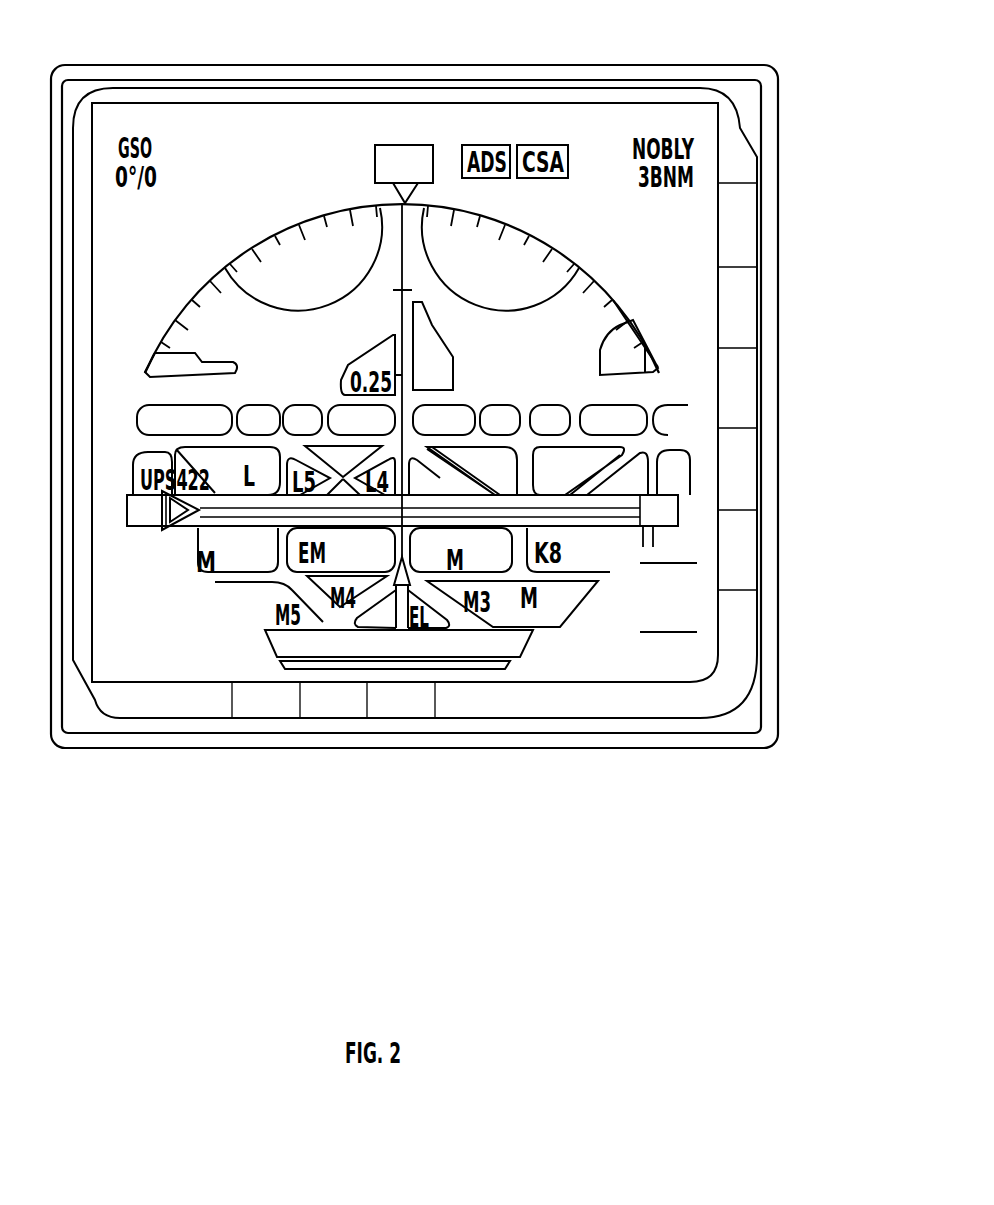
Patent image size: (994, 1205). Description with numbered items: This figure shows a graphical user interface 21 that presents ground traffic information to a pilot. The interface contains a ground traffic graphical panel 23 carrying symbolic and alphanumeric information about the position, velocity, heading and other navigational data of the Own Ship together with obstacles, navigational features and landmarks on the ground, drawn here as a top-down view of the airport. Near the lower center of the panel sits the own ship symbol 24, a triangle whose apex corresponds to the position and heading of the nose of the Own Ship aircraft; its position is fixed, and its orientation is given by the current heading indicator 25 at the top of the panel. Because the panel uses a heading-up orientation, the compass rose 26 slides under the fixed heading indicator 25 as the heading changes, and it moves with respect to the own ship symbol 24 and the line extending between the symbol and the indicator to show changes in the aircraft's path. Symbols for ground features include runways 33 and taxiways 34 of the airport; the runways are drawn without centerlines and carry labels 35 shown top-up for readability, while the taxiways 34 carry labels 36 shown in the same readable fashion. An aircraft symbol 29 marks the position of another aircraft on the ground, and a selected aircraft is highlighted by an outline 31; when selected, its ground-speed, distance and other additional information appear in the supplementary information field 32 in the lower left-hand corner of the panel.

The graphical user interface 21 is at (433, 749).
The ground traffic graphical panel 23 is at (458, 88).
The own ship symbol 24 is at (447, 620).
The current heading indicator 25 is at (434, 146).
The compass rose 26 is at (613, 292).
The aircraft symbol 29 is at (178, 530).
The outline 31 is at (190, 518).
The supplementary information field 32 is at (156, 668).
The runway 33 is at (311, 515).
The taxiway 34 is at (650, 430).
The runway label 35 is at (660, 527).
The taxiway label 36 is at (553, 402).